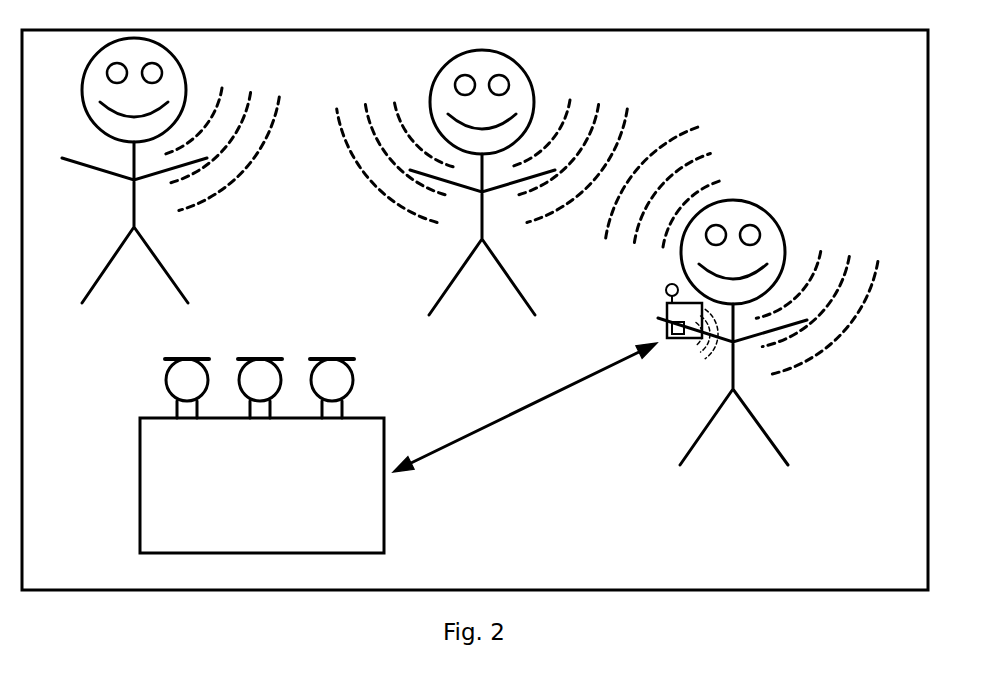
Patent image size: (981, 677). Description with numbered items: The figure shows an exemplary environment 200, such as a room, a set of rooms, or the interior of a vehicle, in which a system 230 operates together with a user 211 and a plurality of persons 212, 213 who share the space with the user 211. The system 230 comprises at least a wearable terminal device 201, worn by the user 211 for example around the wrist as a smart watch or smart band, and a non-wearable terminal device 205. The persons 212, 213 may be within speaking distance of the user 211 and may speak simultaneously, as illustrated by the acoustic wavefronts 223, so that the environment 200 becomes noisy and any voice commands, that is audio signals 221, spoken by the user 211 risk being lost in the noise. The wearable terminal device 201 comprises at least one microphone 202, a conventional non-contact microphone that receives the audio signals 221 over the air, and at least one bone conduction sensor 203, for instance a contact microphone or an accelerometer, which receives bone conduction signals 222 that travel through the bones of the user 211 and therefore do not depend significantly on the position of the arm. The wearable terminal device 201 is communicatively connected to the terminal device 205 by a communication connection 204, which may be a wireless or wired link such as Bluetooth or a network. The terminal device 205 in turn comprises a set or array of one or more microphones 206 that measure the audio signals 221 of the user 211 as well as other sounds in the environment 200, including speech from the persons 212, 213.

The environment 200 is at (857, 30).
The wearable terminal device 201 is at (667, 307).
The microphone 202 is at (665, 288).
The bone conduction sensor 203 is at (676, 336).
The communication connection 204 is at (523, 410).
The terminal device 205 is at (385, 538).
The microphones 206 is at (140, 380).
The user 211 is at (782, 228).
The person 212 is at (527, 72).
The person 213 is at (181, 68).
The audio signals 221 is at (850, 332).
The bone conduction signals 222 is at (727, 355).
The acoustic wavefronts 223 is at (392, 207).
The system 230 is at (668, 506).